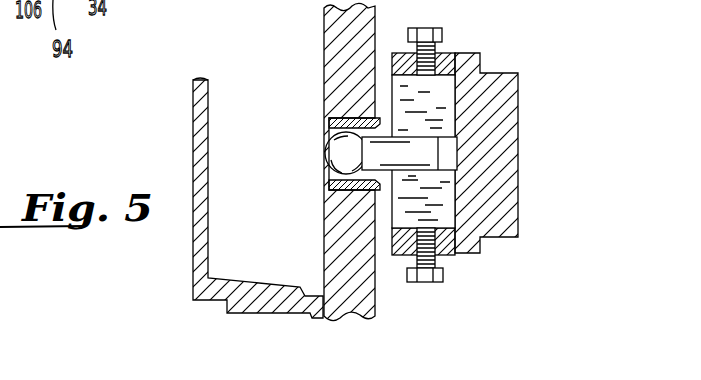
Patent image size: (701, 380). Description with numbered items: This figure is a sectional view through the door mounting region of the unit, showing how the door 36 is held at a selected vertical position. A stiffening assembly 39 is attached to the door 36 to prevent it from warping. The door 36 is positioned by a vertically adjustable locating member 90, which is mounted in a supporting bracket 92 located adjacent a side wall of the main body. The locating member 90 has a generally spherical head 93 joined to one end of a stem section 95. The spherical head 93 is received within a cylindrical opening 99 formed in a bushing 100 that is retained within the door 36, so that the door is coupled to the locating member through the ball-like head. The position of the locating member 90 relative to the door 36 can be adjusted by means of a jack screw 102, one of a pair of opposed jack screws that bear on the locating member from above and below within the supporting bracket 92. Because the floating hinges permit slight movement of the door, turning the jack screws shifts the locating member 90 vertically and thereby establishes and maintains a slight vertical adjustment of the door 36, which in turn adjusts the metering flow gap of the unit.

The door 36 is at (335, 53).
The stiffening assembly 39 is at (197, 163).
The locating member 90 is at (384, 100).
The supporting bracket 92 is at (493, 80).
The spherical head 93 is at (340, 155).
The stem section 95 is at (423, 160).
The cylindrical opening 99 is at (327, 192).
The bushing 100 is at (333, 121).
The jack screw 102 is at (438, 32).